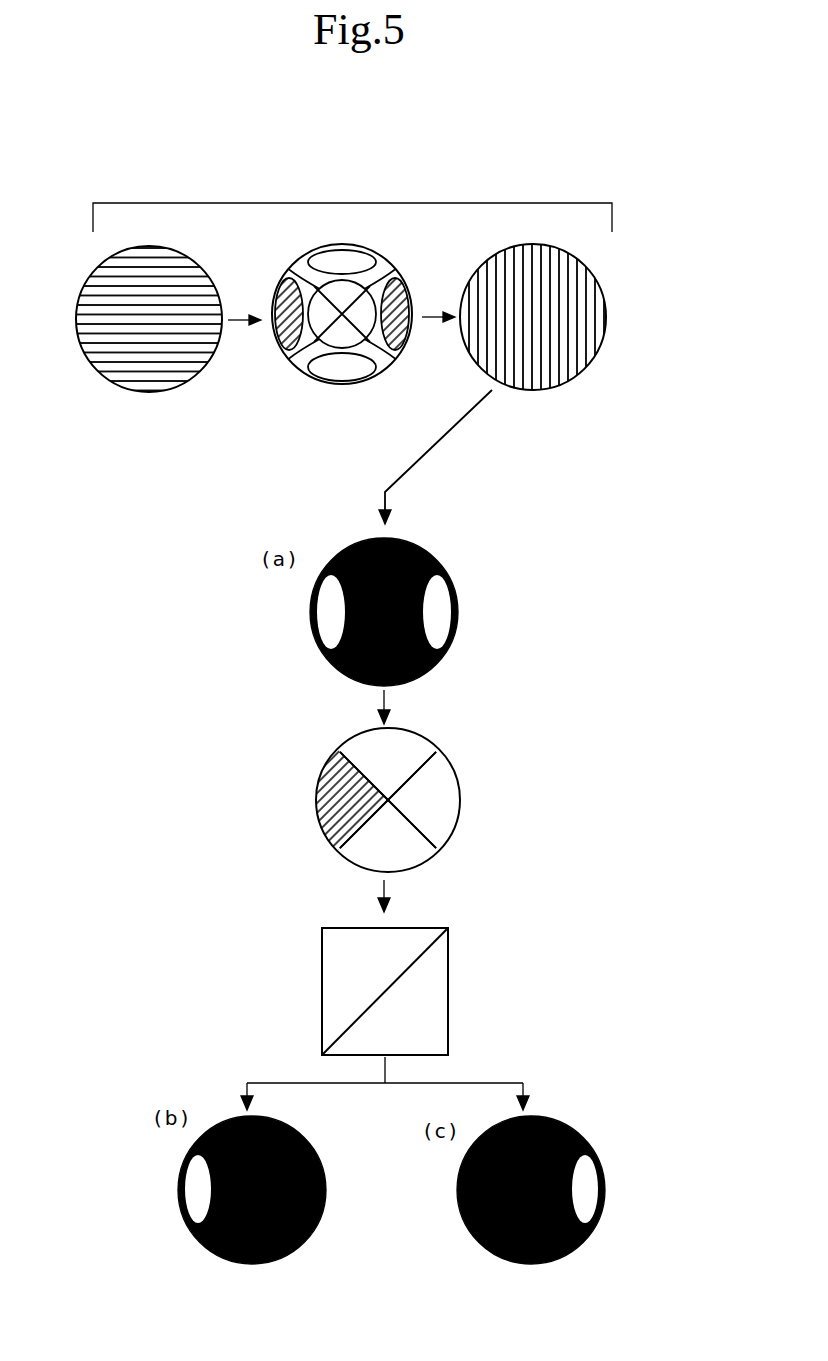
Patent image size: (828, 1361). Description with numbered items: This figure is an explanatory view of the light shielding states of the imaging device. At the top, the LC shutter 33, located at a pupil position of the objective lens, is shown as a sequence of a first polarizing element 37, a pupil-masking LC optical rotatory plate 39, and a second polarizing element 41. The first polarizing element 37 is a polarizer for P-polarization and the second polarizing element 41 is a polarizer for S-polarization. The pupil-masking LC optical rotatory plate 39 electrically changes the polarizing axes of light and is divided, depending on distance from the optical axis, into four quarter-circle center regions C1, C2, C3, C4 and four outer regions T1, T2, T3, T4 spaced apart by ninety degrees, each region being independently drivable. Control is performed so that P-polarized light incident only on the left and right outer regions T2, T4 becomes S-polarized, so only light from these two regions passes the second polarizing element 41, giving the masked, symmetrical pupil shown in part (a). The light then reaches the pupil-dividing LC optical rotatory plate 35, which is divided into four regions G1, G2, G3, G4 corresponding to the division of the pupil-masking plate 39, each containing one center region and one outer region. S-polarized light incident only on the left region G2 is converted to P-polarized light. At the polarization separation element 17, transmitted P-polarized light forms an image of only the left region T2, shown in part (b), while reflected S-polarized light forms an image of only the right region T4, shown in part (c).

The LC shutter 33 is at (345, 203).
The first polarizing element 37 is at (150, 392).
The pupil-masking LC optical rotatory plate 39 is at (336, 351).
The second polarizing element 41 is at (537, 390).
The pupil-dividing LC optical rotatory plate 35 is at (362, 801).
The polarization separation element 17 is at (320, 995).
The outer region T1 is at (345, 258).
The outer region T2 is at (273, 303).
The outer region T3 is at (353, 367).
The outer region T4 is at (405, 328).
The center region C1 is at (328, 290).
The center region C2 is at (315, 325).
The center region C3 is at (355, 342).
The center region C4 is at (368, 302).
The region G1 is at (413, 747).
The region G2 is at (330, 823).
The region G3 is at (402, 847).
The region G4 is at (447, 805).